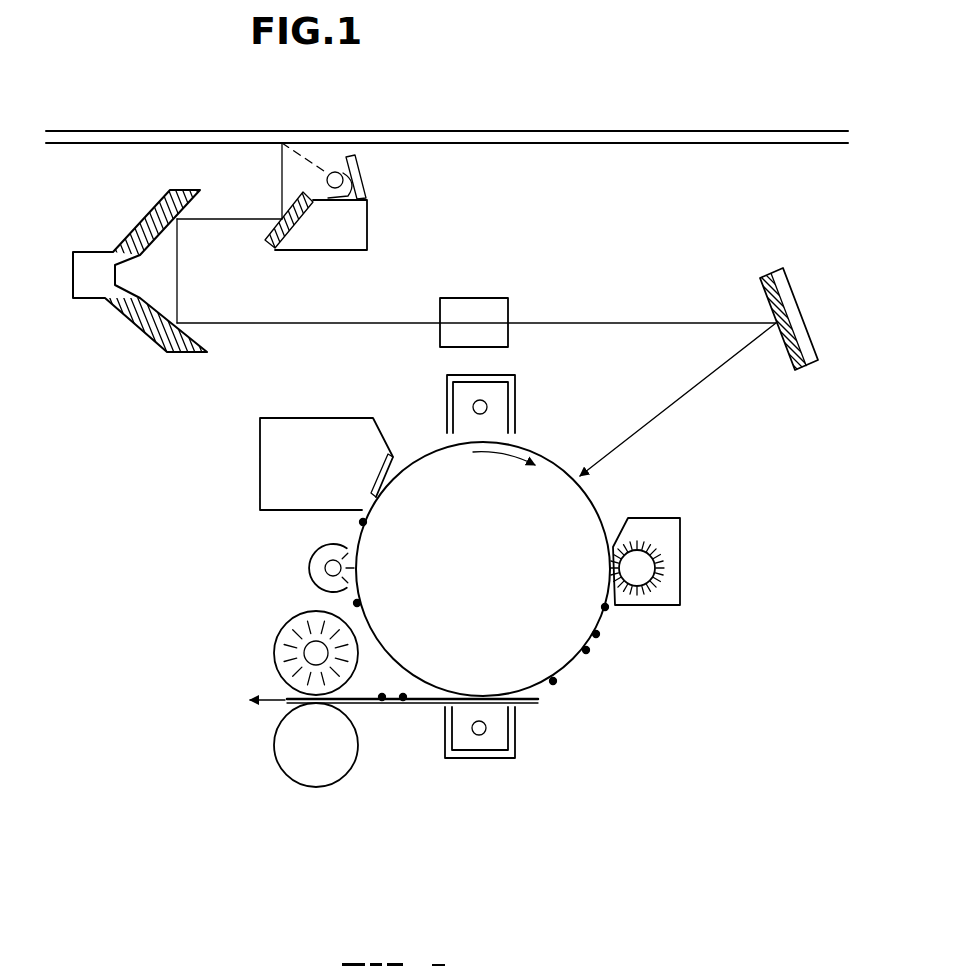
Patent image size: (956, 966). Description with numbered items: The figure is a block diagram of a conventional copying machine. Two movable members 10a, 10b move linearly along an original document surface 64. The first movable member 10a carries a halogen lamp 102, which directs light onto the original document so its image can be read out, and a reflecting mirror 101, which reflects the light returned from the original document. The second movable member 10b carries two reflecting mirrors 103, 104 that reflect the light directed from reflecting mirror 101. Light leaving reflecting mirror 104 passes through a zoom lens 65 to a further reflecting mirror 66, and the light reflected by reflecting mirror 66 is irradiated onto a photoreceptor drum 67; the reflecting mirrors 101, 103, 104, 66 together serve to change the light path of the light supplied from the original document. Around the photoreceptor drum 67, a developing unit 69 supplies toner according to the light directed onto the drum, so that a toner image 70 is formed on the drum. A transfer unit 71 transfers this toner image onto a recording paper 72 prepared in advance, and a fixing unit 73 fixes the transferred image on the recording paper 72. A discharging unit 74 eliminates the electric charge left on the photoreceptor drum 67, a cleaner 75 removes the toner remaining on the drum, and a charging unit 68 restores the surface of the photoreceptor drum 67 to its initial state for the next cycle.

The original document surface 64 is at (290, 126).
The movable member 10b is at (92, 287).
The reflecting mirror 103 is at (200, 196).
The reflecting mirror 104 is at (194, 349).
The movable member 10a is at (353, 222).
The reflecting mirror 101 is at (273, 248).
The halogen lamp 102 is at (350, 165).
The zoom lens 65 is at (497, 308).
The reflecting mirror 66 is at (787, 360).
The photoreceptor drum 67 is at (587, 497).
The charging unit 68 is at (515, 397).
The developing unit 69 is at (672, 565).
The toner image 70 is at (588, 650).
The transfer unit 71 is at (495, 760).
The recording paper 72 is at (537, 704).
The fixing unit 73 is at (278, 660).
The discharging unit 74 is at (308, 567).
The cleaner 75 is at (268, 457).